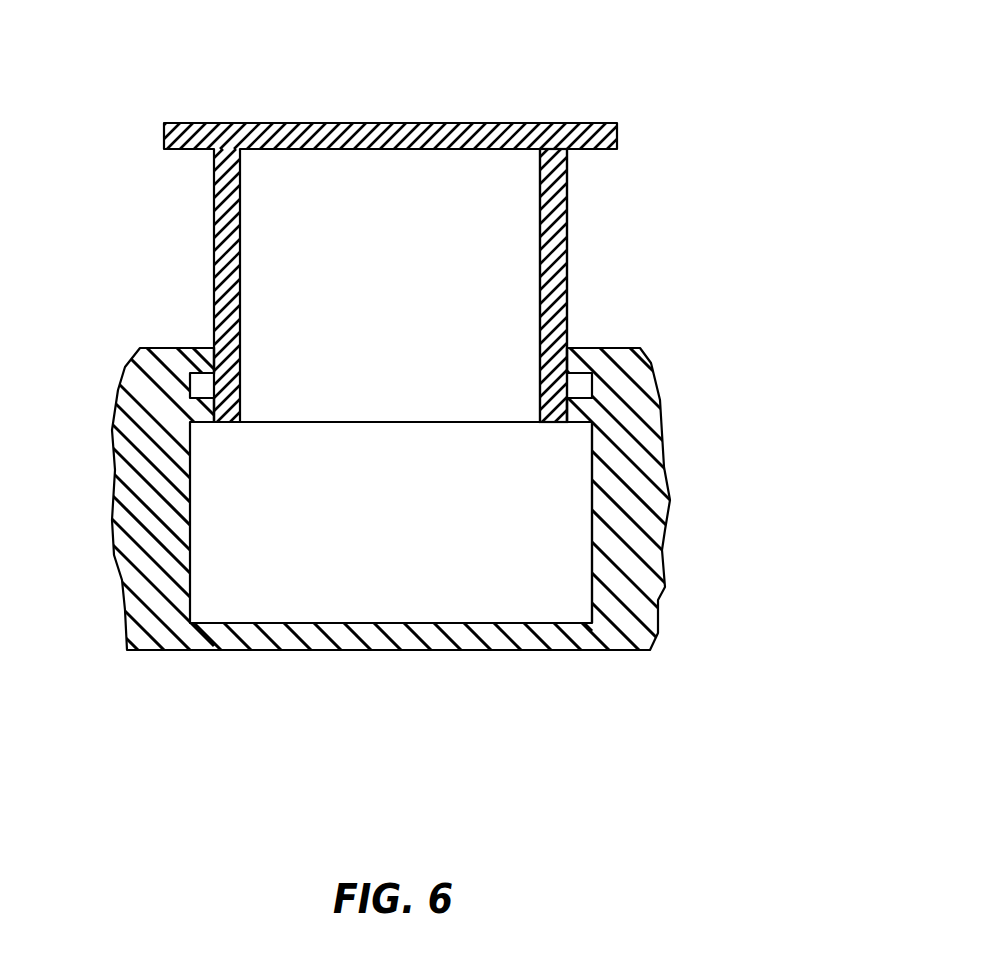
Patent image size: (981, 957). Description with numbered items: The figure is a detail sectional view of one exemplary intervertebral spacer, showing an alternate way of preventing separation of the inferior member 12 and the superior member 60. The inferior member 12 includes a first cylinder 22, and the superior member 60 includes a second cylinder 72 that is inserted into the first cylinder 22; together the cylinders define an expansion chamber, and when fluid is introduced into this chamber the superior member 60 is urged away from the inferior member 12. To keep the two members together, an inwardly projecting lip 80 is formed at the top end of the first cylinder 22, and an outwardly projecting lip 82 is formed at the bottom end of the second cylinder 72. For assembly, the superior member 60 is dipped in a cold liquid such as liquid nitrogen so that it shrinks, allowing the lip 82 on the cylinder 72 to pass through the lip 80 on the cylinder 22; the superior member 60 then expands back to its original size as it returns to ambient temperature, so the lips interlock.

The inferior member 12 is at (553, 690).
The first cylinder 22 is at (596, 463).
The superior member 60 is at (467, 218).
The second cylinder 72 is at (567, 244).
The inwardly projecting lip 80 is at (203, 360).
The outwardly projecting lip 82 is at (197, 406).